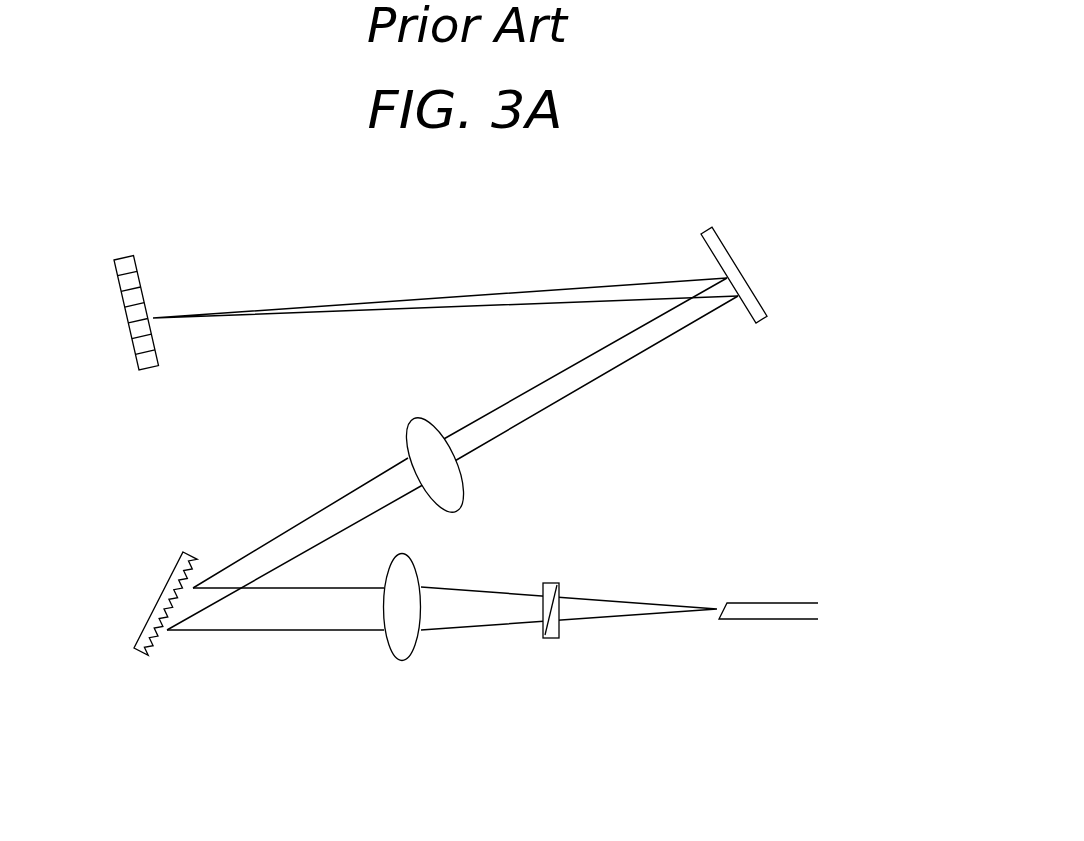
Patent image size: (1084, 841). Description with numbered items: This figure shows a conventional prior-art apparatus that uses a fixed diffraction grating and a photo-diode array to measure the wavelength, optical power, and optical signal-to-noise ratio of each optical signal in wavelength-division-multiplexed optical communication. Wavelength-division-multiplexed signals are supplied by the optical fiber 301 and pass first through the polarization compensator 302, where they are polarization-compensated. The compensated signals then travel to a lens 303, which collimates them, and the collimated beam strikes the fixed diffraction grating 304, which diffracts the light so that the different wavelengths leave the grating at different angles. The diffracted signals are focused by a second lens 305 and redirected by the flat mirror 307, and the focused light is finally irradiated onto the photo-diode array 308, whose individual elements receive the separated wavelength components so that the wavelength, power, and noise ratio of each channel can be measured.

The optical fiber 301 is at (772, 603).
The polarization compensator 302 is at (553, 638).
The lens 303 is at (402, 661).
The fixed diffraction grating 304 is at (157, 602).
The lens 305 is at (391, 430).
The flat mirror 307 is at (747, 277).
The photo-diode array 308 is at (137, 258).